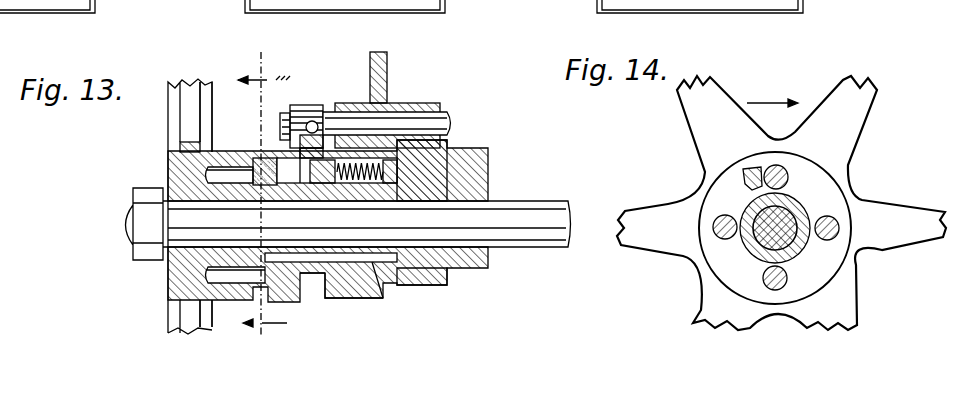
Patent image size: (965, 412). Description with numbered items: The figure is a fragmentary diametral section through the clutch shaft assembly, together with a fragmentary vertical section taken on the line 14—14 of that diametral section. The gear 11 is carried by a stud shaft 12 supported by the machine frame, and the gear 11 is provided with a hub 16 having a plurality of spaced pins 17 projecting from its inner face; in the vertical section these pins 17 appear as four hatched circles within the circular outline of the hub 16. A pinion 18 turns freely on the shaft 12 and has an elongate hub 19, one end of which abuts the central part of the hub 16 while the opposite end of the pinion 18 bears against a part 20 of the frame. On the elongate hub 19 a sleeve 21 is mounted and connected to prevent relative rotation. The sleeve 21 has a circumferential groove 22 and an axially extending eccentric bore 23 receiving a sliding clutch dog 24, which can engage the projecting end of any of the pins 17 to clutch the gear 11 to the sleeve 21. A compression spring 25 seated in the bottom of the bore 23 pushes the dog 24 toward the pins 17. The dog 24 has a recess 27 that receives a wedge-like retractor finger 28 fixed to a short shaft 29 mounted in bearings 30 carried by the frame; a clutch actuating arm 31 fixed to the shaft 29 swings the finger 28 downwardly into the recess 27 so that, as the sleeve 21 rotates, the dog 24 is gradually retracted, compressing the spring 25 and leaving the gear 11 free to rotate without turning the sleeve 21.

In FIG. 13, the gear 11 is at (175, 122).
In FIG. 14, the gear 11 is at (862, 120).
In FIG. 13, the stud shaft 12 is at (556, 212).
In FIG. 14, the stud shaft 12 is at (790, 203).
In FIG. 13, the section line 14— 14 is at (276, 181).
In FIG. 13, the hub 16 is at (226, 150).
In FIG. 14, the hub 16 is at (838, 212).
In FIG. 13, the pins 17 is at (235, 172).
In FIG. 14, the pins 17 is at (767, 282).
In FIG. 13, the pinion 18 is at (432, 285).
In FIG. 13, the elongate hub 19 is at (378, 270).
In FIG. 13, the frame part 20 is at (470, 186).
In FIG. 13, the sleeve 21 is at (352, 298).
In FIG. 13, the circumferential groove 22 is at (318, 290).
In FIG. 13, the eccentric bore 23 is at (347, 188).
In FIG. 13, the clutch dog 24 is at (268, 160).
In FIG. 14, the clutch dog 24 is at (745, 170).
In FIG. 13, the compression spring 25 is at (420, 155).
In FIG. 13, the recess 27 is at (316, 162).
In FIG. 13, the retractor finger 28 is at (292, 138).
In FIG. 13, the short shaft 29 is at (405, 126).
In FIG. 13, the bearings 30 is at (440, 106).
In FIG. 13, the clutch actuating arm 31 is at (383, 80).